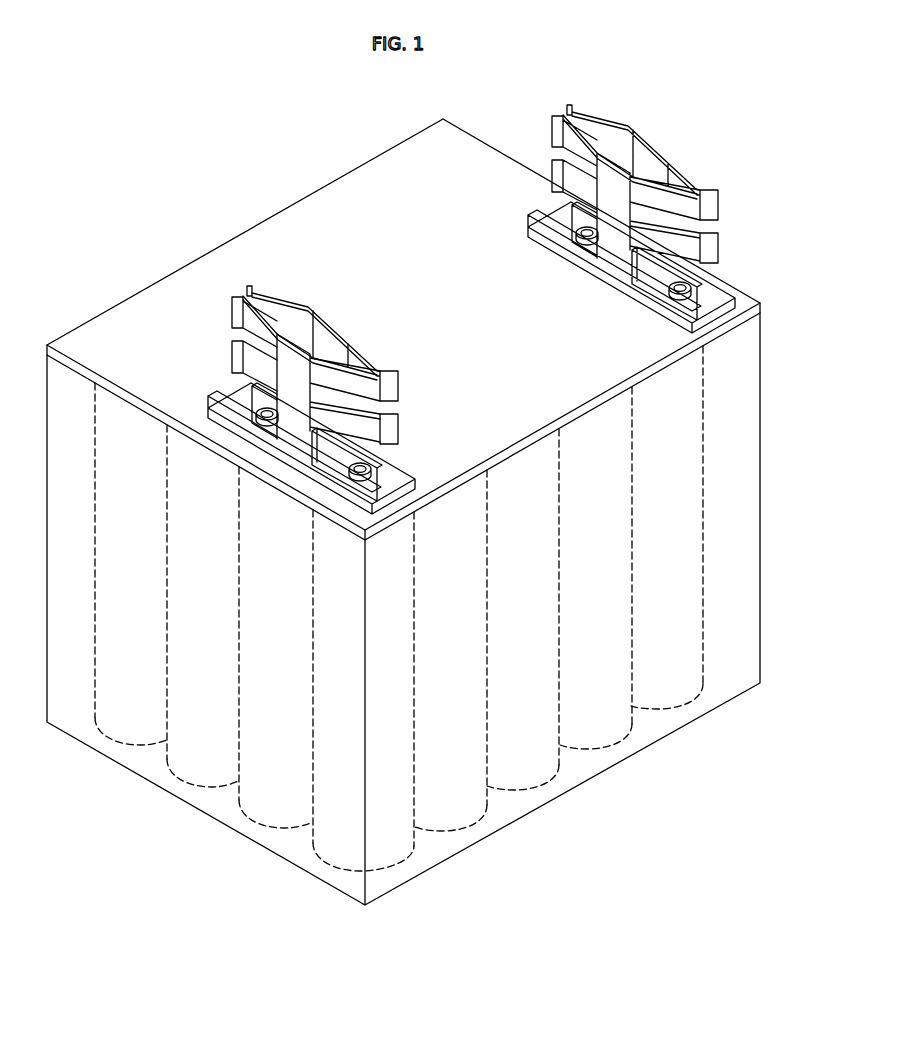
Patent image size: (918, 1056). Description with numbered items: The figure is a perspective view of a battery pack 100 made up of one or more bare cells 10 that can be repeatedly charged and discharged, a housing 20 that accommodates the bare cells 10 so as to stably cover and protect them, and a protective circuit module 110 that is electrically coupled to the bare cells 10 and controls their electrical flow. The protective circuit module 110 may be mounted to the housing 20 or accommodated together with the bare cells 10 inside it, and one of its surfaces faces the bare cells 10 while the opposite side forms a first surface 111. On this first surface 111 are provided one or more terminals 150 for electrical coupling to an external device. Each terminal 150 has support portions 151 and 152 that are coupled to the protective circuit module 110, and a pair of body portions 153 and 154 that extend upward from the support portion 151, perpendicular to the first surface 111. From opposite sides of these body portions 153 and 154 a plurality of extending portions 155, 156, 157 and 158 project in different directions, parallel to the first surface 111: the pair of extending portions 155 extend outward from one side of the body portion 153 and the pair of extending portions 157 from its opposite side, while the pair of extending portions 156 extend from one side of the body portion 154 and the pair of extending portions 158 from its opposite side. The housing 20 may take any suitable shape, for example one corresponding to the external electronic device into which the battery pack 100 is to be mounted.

The battery pack 100 is at (805, 180).
The bare cell 10 is at (690, 572).
The housing 20 is at (762, 494).
The protective circuit module 110 is at (403, 329).
The first surface 111 is at (278, 218).
The terminal 150 is at (334, 399).
The support portion 151 is at (322, 483).
The support portion 152 is at (334, 472).
The body portion 153 is at (236, 446).
The body portion 154 is at (336, 365).
The extending portion 155 is at (328, 354).
The extending portion 156 is at (350, 311).
The extending portion 157 is at (254, 313).
The extending portion 158 is at (310, 310).